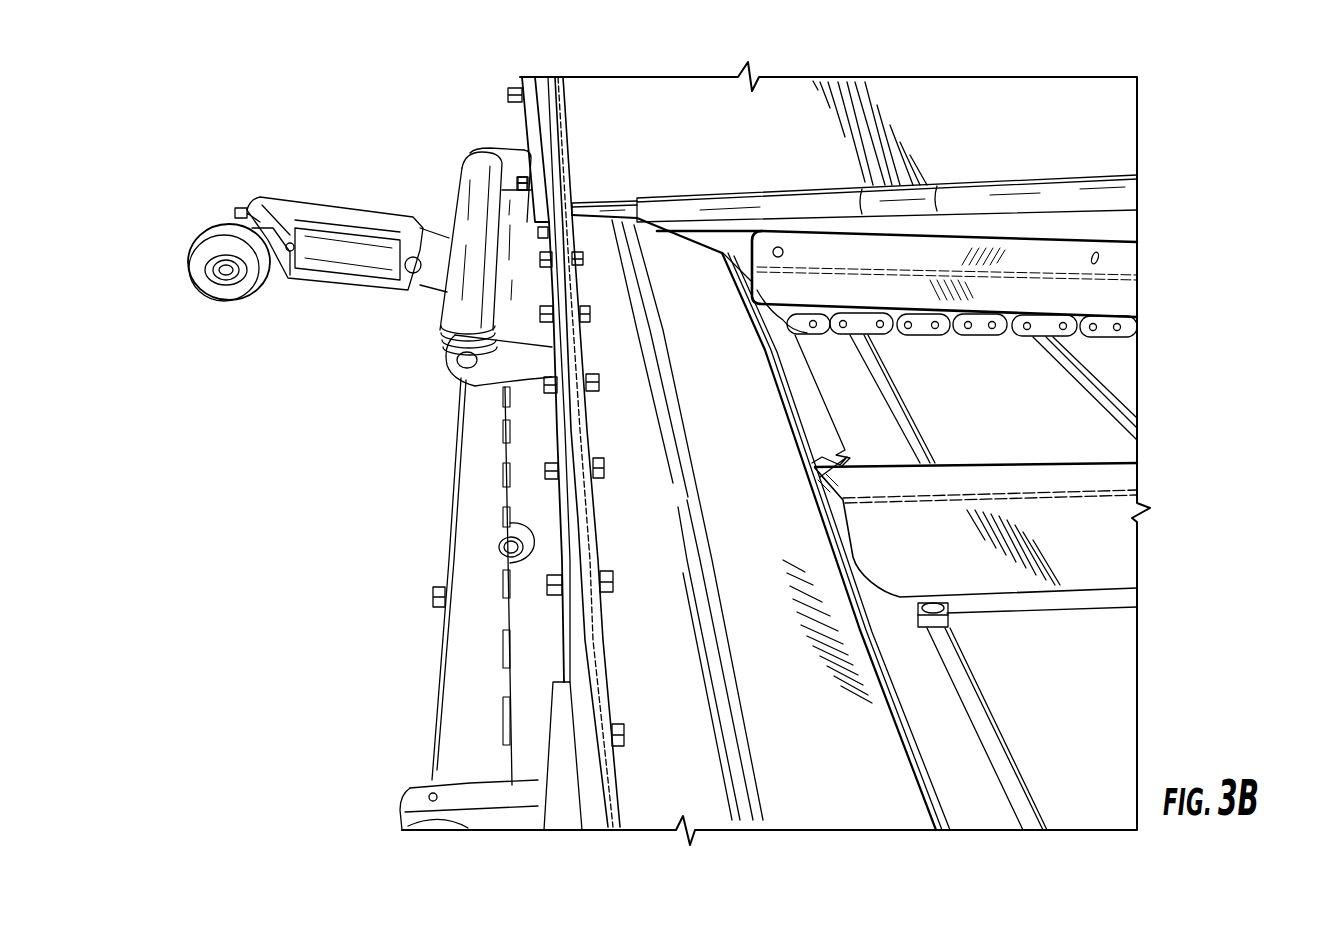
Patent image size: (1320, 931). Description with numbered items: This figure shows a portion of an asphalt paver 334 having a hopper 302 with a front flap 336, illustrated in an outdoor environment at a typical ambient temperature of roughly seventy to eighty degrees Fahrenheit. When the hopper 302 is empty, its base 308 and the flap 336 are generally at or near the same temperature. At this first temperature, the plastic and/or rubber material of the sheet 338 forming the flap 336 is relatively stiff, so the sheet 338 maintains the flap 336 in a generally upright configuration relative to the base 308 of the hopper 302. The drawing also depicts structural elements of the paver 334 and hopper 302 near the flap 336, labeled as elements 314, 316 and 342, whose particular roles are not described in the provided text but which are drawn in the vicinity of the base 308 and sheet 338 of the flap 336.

The hopper 302 is at (976, 107).
The base 308 is at (1118, 482).
The fastener 314 is at (548, 585).
The chain guide bar 316 is at (1118, 368).
The paver 334 is at (247, 121).
The flap 336 is at (553, 397).
The sheet 338 is at (562, 440).
The side plate 342 is at (575, 495).